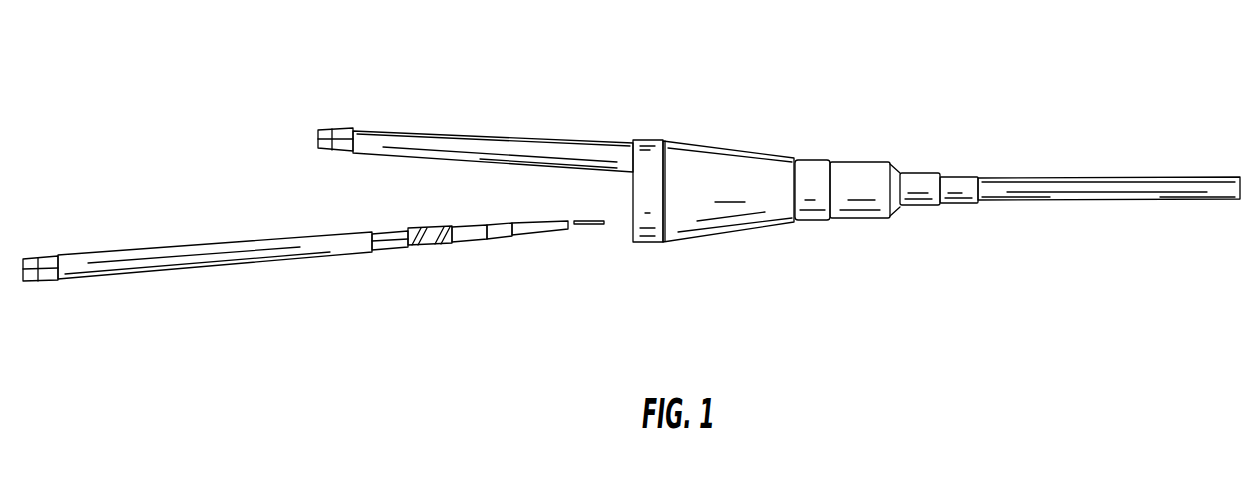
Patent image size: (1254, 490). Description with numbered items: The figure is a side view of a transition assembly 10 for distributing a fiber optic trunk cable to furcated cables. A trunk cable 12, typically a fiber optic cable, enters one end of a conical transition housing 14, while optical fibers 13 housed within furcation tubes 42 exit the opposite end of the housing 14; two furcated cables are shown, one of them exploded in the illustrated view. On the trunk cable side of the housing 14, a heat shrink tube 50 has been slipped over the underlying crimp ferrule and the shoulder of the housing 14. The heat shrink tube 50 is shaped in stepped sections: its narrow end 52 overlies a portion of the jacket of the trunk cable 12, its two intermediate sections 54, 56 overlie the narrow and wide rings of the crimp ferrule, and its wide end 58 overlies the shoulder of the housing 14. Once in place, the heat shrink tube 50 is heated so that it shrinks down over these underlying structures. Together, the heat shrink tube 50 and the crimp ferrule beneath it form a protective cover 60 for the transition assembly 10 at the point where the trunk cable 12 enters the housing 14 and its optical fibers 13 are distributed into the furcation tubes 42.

The transition assembly 10 is at (1133, 94).
The trunk cable 12 is at (1118, 197).
The optical fibers 13 is at (340, 133).
The conical transition housing 14 is at (723, 160).
The furcation tubes 42 is at (433, 140).
The heat shrink tube 50 is at (891, 148).
The narrow end 52 is at (965, 180).
The intermediate section 54 is at (915, 178).
The intermediate section 56 is at (868, 214).
The wide end 58 is at (813, 167).
The protective cover 60 is at (735, 250).